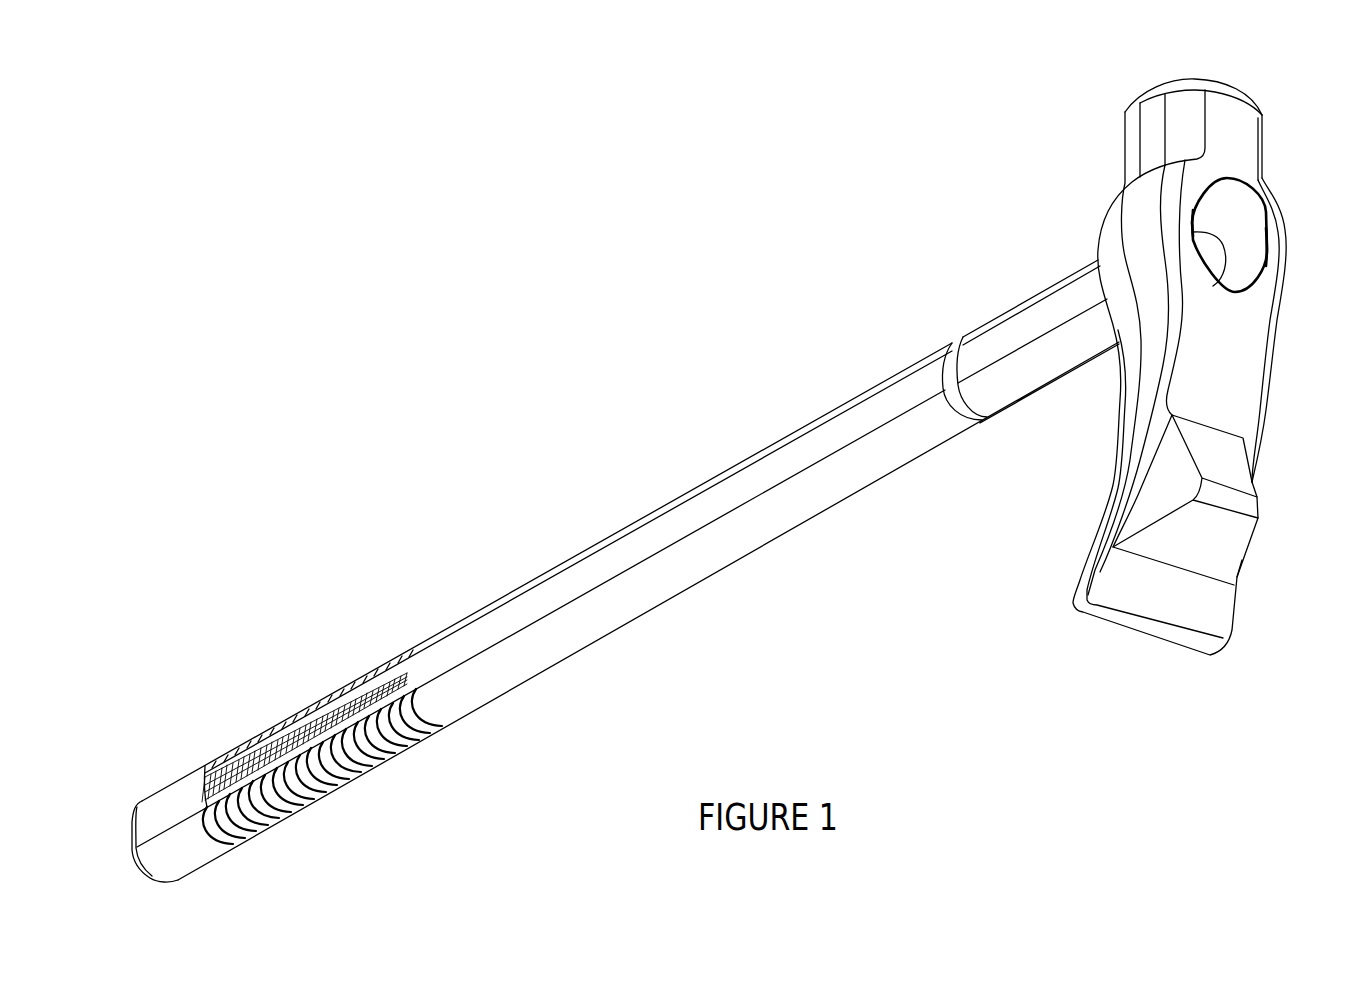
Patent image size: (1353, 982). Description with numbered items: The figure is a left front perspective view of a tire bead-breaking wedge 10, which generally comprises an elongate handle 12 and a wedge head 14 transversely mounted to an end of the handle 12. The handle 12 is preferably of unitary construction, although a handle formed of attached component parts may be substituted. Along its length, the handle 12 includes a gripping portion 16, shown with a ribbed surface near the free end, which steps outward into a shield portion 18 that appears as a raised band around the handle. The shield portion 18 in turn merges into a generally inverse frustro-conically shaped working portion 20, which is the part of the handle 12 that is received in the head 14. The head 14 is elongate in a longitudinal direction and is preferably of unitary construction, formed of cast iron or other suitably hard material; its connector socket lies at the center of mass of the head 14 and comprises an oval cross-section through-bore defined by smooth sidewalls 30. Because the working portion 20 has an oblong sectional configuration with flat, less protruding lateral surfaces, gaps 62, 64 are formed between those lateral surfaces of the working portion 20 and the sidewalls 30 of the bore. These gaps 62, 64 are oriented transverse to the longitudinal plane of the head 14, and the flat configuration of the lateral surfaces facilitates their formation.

The tire bead-breaking wedge 10 is at (739, 480).
The elongate handle 12 is at (625, 569).
The wedge head 14 is at (1200, 367).
The gripping portion 16 is at (363, 775).
The shield portion 18 is at (984, 323).
The working portion 20 is at (1253, 242).
The smooth sidewalls 30 is at (1221, 279).
The gap 62 is at (1268, 252).
The gap 64 is at (1190, 218).